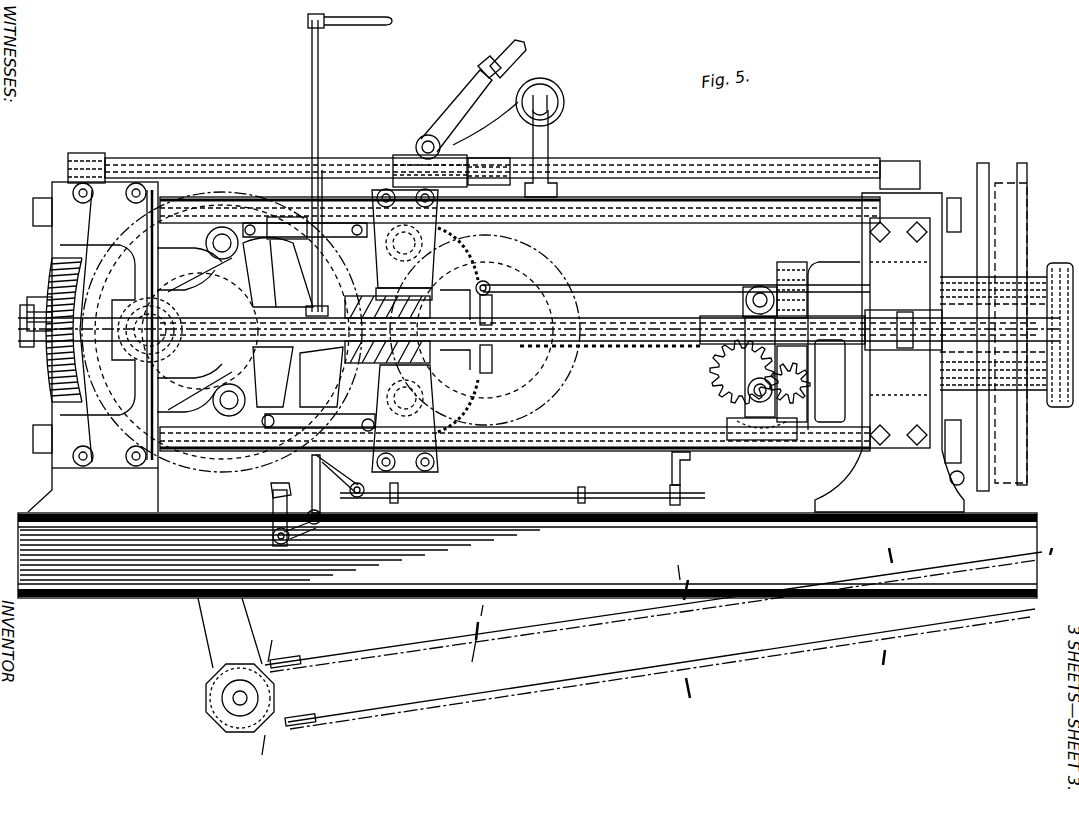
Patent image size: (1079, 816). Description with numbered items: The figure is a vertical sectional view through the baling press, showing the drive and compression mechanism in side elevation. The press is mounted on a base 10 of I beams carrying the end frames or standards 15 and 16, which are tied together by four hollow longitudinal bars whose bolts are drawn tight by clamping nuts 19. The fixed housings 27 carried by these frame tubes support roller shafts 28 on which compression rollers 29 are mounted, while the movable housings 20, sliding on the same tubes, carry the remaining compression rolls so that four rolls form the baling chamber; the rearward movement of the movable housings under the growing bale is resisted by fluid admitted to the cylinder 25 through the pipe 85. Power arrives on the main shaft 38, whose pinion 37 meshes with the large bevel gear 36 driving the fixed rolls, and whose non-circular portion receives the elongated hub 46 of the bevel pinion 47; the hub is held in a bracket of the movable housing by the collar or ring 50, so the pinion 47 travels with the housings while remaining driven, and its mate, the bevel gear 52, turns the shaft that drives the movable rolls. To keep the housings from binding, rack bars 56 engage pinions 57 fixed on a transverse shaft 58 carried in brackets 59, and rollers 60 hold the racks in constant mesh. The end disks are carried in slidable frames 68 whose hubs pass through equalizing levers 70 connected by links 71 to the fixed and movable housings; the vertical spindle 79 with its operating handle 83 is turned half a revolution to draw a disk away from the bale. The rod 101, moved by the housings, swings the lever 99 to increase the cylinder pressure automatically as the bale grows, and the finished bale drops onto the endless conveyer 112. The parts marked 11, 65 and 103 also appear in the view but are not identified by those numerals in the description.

The base 10 is at (527, 555).
The guide rail 11 is at (272, 200).
The end frame or standard 15 is at (62, 390).
The end frame or standard 16 is at (889, 352).
The clamping nuts 19 is at (60, 190).
The movable housings 20 is at (468, 375).
The cylinder 25 is at (500, 312).
The fixed housings 27 is at (245, 215).
The roller shafts 28 is at (220, 262).
The compression rollers 29 is at (200, 190).
The large bevel gear 36 is at (62, 268).
The pinion 37 is at (28, 305).
The main shaft 38 is at (712, 325).
The elongated hub 46 is at (382, 374).
The bevel pinion 47 is at (370, 362).
The collar or ring 50 is at (405, 366).
The bevel gear 52 is at (405, 244).
The rack bars 56 is at (718, 356).
The pinions 57 is at (746, 384).
The transversely disposed shaft 58 is at (740, 395).
The brackets 59 is at (815, 346).
The rollers 60 is at (760, 284).
The arm 65 is at (278, 273).
The slidable frames 68 is at (318, 389).
The equalizing lever 70 is at (273, 377).
The links 71 is at (334, 458).
The vertical shaft or spindle 79 is at (320, 135).
The operating handle 83 is at (400, 198).
The pipe 85 is at (380, 27).
The lever 99 is at (985, 195).
The rod 101 is at (625, 285).
The plate 103 is at (1024, 190).
The endless conveyer 112 is at (290, 670).